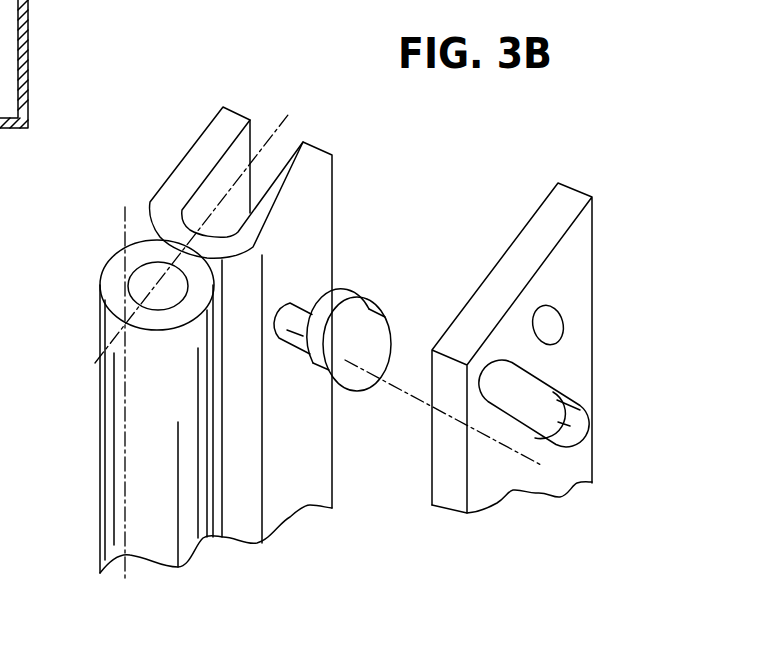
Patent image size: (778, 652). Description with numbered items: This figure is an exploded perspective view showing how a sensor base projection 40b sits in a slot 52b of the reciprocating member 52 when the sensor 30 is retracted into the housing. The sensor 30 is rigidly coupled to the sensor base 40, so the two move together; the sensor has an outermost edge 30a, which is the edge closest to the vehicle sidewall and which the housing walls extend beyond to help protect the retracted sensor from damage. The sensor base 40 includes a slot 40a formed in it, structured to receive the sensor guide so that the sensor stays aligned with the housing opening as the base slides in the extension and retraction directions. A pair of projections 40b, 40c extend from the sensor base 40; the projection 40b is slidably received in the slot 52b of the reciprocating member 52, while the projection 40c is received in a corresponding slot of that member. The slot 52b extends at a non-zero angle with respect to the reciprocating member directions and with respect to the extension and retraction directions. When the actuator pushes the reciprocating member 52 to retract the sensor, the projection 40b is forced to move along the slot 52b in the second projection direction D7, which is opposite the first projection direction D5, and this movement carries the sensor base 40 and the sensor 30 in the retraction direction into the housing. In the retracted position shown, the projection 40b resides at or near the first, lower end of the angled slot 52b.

The sensor 30 is at (110, 288).
The outermost edge of the sensor 30a is at (123, 465).
The sensor base 40 is at (176, 166).
The sensor base slot 40a is at (240, 147).
The projection 40b is at (365, 302).
The projection 40c is at (37, 0).
The reciprocating member 52 is at (580, 184).
The slot of the reciprocating member 52b is at (586, 449).
The first projection direction D5 is at (503, 437).
The second projection direction D7 is at (548, 360).